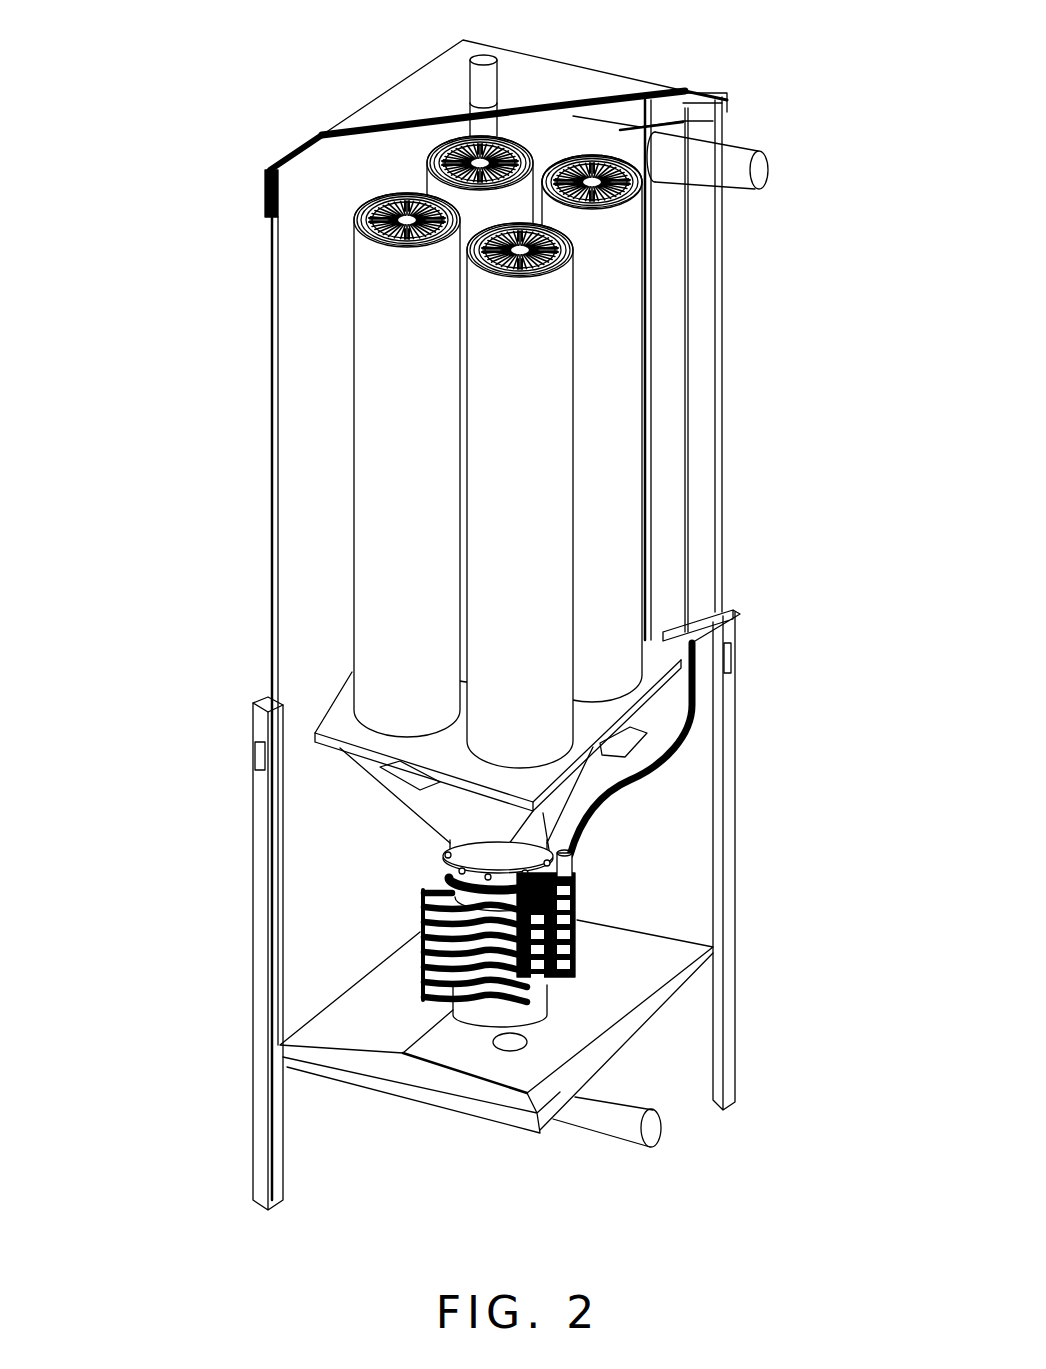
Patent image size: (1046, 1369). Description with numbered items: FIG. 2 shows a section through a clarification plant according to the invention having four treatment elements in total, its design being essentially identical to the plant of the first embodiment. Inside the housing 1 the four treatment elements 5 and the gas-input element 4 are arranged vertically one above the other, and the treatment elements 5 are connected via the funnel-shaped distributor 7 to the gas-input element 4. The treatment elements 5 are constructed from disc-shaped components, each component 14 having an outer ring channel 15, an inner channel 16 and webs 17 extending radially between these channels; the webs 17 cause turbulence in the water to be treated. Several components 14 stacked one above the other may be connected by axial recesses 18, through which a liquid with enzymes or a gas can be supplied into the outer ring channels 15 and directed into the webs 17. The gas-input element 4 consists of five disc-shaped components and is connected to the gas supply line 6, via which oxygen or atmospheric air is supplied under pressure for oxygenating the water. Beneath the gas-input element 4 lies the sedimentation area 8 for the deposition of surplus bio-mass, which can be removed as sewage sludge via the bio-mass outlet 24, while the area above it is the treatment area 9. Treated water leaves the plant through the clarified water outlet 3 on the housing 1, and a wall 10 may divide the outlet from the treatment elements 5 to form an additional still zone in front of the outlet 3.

The housing 1 is at (723, 420).
The water outlet 3 is at (764, 169).
The gas-input element 4 is at (631, 890).
The treatment elements 5 is at (469, 452).
The gas supply line 6 is at (693, 685).
The distributor 7 is at (560, 797).
The sedimentation area 8 is at (570, 1028).
The treatment area 9 is at (343, 888).
The wall 10 is at (688, 100).
The component 14 is at (473, 990).
The outer ring channel 15 is at (272, 465).
The inner channel 16 is at (357, 210).
The webs 17 is at (648, 177).
The axial recesses 18 is at (573, 962).
The bio-mass outlet 24 is at (609, 1123).